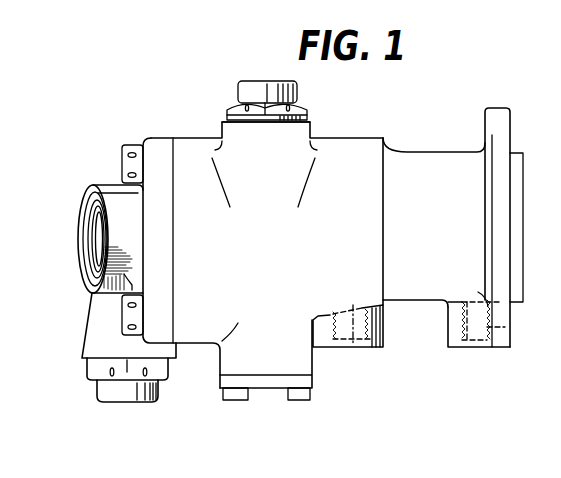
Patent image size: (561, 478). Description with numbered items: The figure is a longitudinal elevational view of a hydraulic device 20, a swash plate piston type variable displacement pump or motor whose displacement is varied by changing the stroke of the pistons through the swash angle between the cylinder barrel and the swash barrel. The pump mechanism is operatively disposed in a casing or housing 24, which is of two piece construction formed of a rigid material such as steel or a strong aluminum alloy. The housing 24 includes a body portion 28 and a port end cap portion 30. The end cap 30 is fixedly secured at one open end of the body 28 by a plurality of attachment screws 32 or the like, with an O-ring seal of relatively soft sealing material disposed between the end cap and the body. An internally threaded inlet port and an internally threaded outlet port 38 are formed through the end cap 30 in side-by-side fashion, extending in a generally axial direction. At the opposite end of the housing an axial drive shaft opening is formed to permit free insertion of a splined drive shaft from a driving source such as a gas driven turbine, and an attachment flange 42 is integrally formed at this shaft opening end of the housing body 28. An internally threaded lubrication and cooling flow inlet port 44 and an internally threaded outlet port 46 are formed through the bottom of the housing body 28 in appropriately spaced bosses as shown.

The hydraulic device 20 is at (328, 391).
The housing 24 is at (358, 136).
The body portion 28 is at (440, 158).
The port end cap portion 30 is at (100, 319).
The attachment screws 32 is at (122, 162).
The internally threaded outlet port 38 is at (92, 247).
The attachment flange 42 is at (492, 137).
The lubrication and cooling flow inlet port 44 is at (472, 344).
The internally threaded outlet port 46 is at (344, 338).